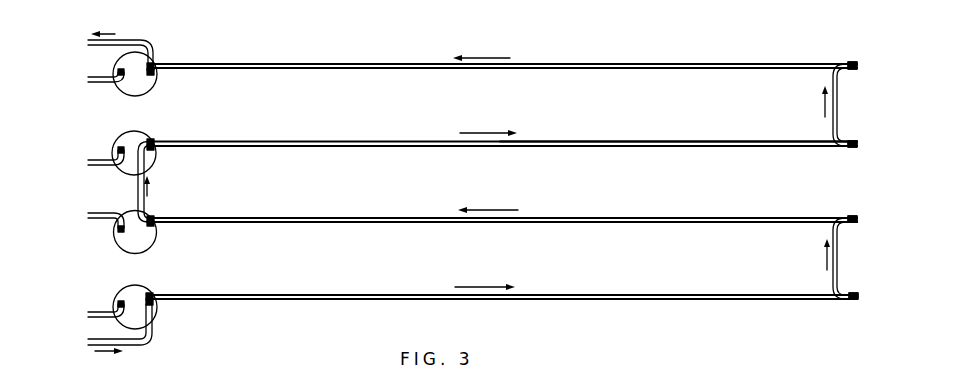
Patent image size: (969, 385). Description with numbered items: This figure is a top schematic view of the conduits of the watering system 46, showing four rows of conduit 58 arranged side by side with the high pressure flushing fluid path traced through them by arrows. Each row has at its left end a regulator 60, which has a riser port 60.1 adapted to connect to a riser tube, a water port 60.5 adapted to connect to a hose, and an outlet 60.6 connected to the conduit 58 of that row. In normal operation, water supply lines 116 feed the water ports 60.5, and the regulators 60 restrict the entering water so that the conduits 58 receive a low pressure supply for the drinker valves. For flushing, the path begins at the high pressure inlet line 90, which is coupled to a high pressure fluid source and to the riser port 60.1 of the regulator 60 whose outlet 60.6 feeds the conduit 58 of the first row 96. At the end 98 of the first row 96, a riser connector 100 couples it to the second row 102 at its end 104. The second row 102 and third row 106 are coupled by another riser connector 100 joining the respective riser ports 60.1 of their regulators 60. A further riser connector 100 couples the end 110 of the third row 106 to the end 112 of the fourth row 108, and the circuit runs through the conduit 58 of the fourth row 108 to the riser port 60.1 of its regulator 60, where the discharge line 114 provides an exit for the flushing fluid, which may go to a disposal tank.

The watering system 46 is at (290, 51).
The conduit 58 is at (388, 69).
The regulator 60 is at (140, 105).
The riser port 60.1 is at (156, 74).
The water port 60.5 is at (121, 68).
The outlet 60.6 is at (153, 64).
The high pressure inlet line 90 is at (140, 346).
The first row 96 is at (652, 285).
The end of first row 98 is at (857, 301).
The riser connector 100 is at (146, 207).
The second row 102 is at (667, 209).
The end of second row 104 is at (857, 216).
The third row 106 is at (669, 133).
The fourth row 108 is at (675, 52).
The end of third row 110 is at (855, 148).
The end of fourth row 112 is at (853, 61).
The discharge line 114 is at (132, 39).
The water supply lines 116 is at (109, 83).